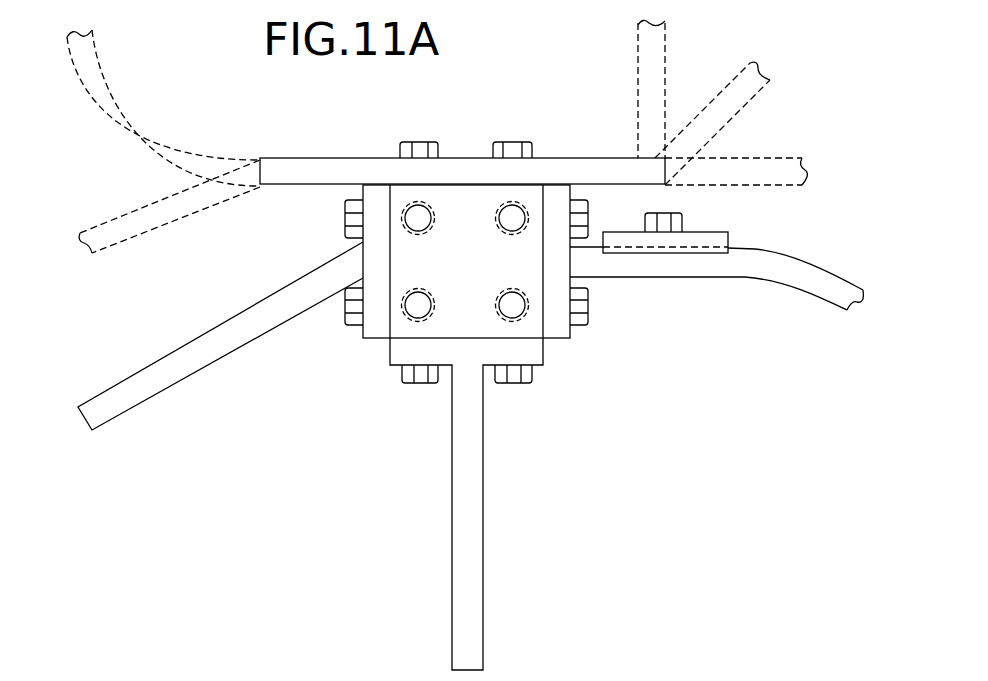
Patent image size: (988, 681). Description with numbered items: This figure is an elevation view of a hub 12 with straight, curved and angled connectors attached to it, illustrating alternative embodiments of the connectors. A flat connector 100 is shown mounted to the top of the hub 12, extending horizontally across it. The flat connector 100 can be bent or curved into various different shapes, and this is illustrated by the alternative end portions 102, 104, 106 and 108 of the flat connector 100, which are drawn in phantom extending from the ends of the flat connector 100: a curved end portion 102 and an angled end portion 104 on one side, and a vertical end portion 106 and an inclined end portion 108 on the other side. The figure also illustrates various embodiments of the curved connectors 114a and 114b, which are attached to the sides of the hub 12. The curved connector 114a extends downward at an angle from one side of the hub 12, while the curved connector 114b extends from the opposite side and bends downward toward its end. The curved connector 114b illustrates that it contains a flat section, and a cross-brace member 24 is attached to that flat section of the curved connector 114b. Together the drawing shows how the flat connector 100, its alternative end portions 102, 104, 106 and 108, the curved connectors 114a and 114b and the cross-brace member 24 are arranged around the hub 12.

The flat connector 100 is at (315, 157).
The alternative end portion of flat connector 102 is at (100, 97).
The alternative end portion of flat connector 104 is at (138, 228).
The alternative end portion of flat connector 106 is at (638, 63).
The alternative end portion of flat connector 108 is at (720, 98).
The hub 12 is at (380, 340).
The curved connector 114a is at (173, 383).
The curved connector 114b is at (673, 278).
The cross-brace member 24 is at (713, 230).